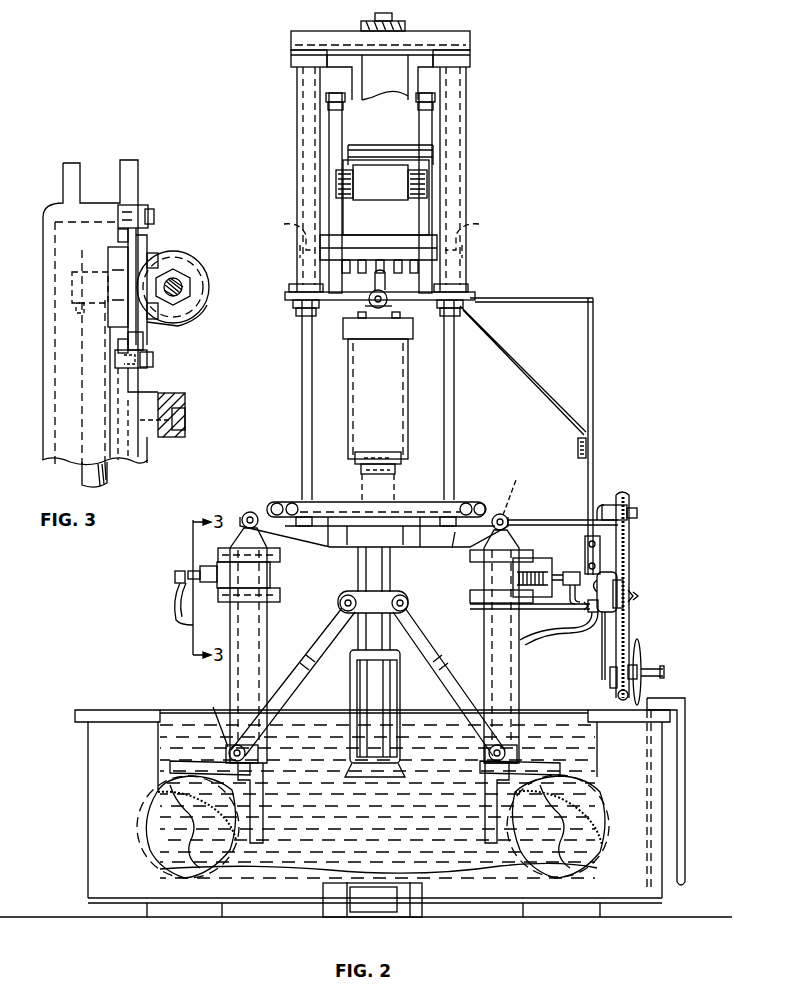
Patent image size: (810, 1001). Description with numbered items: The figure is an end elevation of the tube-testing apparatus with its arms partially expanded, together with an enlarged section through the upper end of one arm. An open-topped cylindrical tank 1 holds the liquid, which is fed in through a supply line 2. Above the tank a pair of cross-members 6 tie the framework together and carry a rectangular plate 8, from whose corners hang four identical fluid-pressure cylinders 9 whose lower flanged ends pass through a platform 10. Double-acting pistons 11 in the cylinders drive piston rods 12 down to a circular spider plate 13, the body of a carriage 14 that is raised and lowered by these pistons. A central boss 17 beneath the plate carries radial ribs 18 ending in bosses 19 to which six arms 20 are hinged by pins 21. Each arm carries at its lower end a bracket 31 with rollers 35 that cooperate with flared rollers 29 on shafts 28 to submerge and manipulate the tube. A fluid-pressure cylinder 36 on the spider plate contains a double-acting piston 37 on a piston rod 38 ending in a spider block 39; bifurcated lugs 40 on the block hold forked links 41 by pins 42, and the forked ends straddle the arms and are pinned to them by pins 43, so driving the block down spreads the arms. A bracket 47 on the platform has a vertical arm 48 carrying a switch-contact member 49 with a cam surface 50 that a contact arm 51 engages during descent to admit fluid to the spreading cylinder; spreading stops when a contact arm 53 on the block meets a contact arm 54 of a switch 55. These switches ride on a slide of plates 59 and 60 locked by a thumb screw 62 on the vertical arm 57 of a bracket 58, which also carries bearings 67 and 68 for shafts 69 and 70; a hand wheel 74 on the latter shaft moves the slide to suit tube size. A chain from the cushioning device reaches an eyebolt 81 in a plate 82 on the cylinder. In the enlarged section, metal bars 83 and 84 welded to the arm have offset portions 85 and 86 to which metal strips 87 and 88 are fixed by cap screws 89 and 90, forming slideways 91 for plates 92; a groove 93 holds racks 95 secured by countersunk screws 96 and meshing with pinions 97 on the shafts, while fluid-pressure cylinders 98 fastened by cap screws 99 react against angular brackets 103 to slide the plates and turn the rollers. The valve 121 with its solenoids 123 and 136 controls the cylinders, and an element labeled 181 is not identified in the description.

In FIG. 2, the tank 1 is at (637, 785).
In FIG. 2, the supply line 2 is at (690, 742).
In FIG. 2, the cross-members 6 is at (342, 67).
In FIG. 2, the rectangular plate 8 is at (470, 50).
In FIG. 2, the fluid-pressure cylinders 9 is at (305, 134).
In FIG. 2, the platform 10 is at (470, 297).
In FIG. 2, the double-acting pistons 11 is at (383, 237).
In FIG. 2, the piston rods 12 is at (303, 378).
In FIG. 2, the spider plate 13 is at (258, 500).
In FIG. 2, the carriage 14 is at (424, 500).
In FIG. 2, the boss 17 is at (395, 538).
In FIG. 2, the ribs 18 is at (456, 550).
In FIG. 2, the bosses 19 is at (519, 487).
In FIG. 2, the arms 20 is at (237, 668).
In FIG. 2, the pins 21 is at (247, 512).
In FIG. 3, the shafts 28 is at (107, 473).
In FIG. 2, the flared rollers 29 is at (245, 828).
In FIG. 2, the bracket 31 is at (214, 718).
In FIG. 2, the rollers 35 is at (200, 772).
In FIG. 2, the fluid-pressure cylinder 36 is at (405, 387).
In FIG. 2, the double-acting piston 37 is at (358, 455).
In FIG. 2, the piston rod 38 is at (370, 485).
In FIG. 2, the spider block 39 is at (362, 602).
In FIG. 2, the bifurcated lugs 40 is at (403, 601).
In FIG. 2, the forked links 41 is at (312, 640).
In FIG. 2, the pins 42 is at (340, 598).
In FIG. 2, the pins 43 is at (237, 745).
In FIG. 2, the bracket 47 is at (530, 296).
In FIG. 2, the vertical arm 48 is at (594, 355).
In FIG. 2, the switch-contact member 49 is at (600, 539).
In FIG. 2, the cam surface 50 is at (596, 512).
In FIG. 2, the contact arm 51 is at (617, 576).
In FIG. 2, the contact arm 53 is at (438, 606).
In FIG. 2, the contact arm 54 is at (587, 630).
In FIG. 2, the switch 55 is at (602, 618).
In FIG. 2, the vertical arm 57 is at (612, 663).
In FIG. 2, the bracket 58 is at (543, 522).
In FIG. 2, the plate 59 is at (635, 602).
In FIG. 2, the plate 60 is at (630, 627).
In FIG. 2, the thumb screw 62 is at (638, 597).
In FIG. 2, the bearing 67 is at (617, 507).
In FIG. 2, the bearing 68 is at (643, 690).
In FIG. 2, the shaft 69 is at (637, 513).
In FIG. 2, the shaft 70 is at (618, 672).
In FIG. 2, the hand wheel 74 is at (641, 657).
In FIG. 2, the eyebolt 81 is at (390, 303).
In FIG. 2, the plate 82 is at (348, 318).
In FIG. 3, the metal bar 83 is at (125, 212).
In FIG. 3, the metal bar 84 is at (107, 372).
In FIG. 3, the offset portion 85 is at (143, 234).
In FIG. 3, the offset portion 86 is at (149, 356).
In FIG. 3, the metal strip 87 is at (147, 242).
In FIG. 3, the metal strip 88 is at (143, 342).
In FIG. 3, the cap screw 89 is at (153, 213).
In FIG. 3, the cap screw 90 is at (153, 365).
In FIG. 3, the slideways 91 is at (127, 237).
In FIG. 3, the plates 92 is at (130, 255).
In FIG. 3, the groove 93 is at (160, 302).
In FIG. 3, the racks 95 is at (90, 292).
In FIG. 3, the countersunk screws 96 is at (207, 276).
In FIG. 3, the pinions 97 is at (77, 293).
In FIG. 3, the fluid-pressure cylinders 98 is at (200, 300).
In FIG. 3, the cap screws 99 is at (158, 262).
In FIG. 3, the angular brackets 103 is at (185, 398).
In FIG. 2, the valve 121 is at (378, 216).
In FIG. 2, the solenoid 123 is at (353, 188).
In FIG. 2, the solenoid 136 is at (410, 196).
In FIG. 2, the plate 181 is at (398, 128).